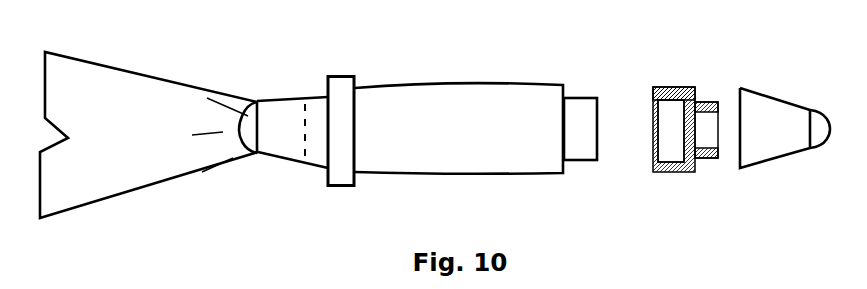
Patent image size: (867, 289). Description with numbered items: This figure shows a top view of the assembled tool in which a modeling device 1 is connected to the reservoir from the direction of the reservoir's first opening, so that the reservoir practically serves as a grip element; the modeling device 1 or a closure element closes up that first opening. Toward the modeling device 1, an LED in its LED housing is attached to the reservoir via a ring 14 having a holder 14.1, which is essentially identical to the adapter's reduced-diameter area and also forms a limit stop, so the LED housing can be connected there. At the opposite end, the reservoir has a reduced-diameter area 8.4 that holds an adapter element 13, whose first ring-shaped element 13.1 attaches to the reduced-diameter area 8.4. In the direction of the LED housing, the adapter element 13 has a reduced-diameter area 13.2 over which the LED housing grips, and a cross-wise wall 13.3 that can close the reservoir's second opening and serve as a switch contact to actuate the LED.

The modeling device 1 is at (125, 107).
The ring 14 is at (341, 107).
The holder 14.1 is at (319, 132).
The reduced-diameter area 8.4 is at (578, 112).
The adapter element 13 is at (668, 97).
The first ring-shaped element 13.1 is at (663, 96).
The reduced-diameter area 13.2 is at (710, 118).
The wall 13.3 is at (683, 127).